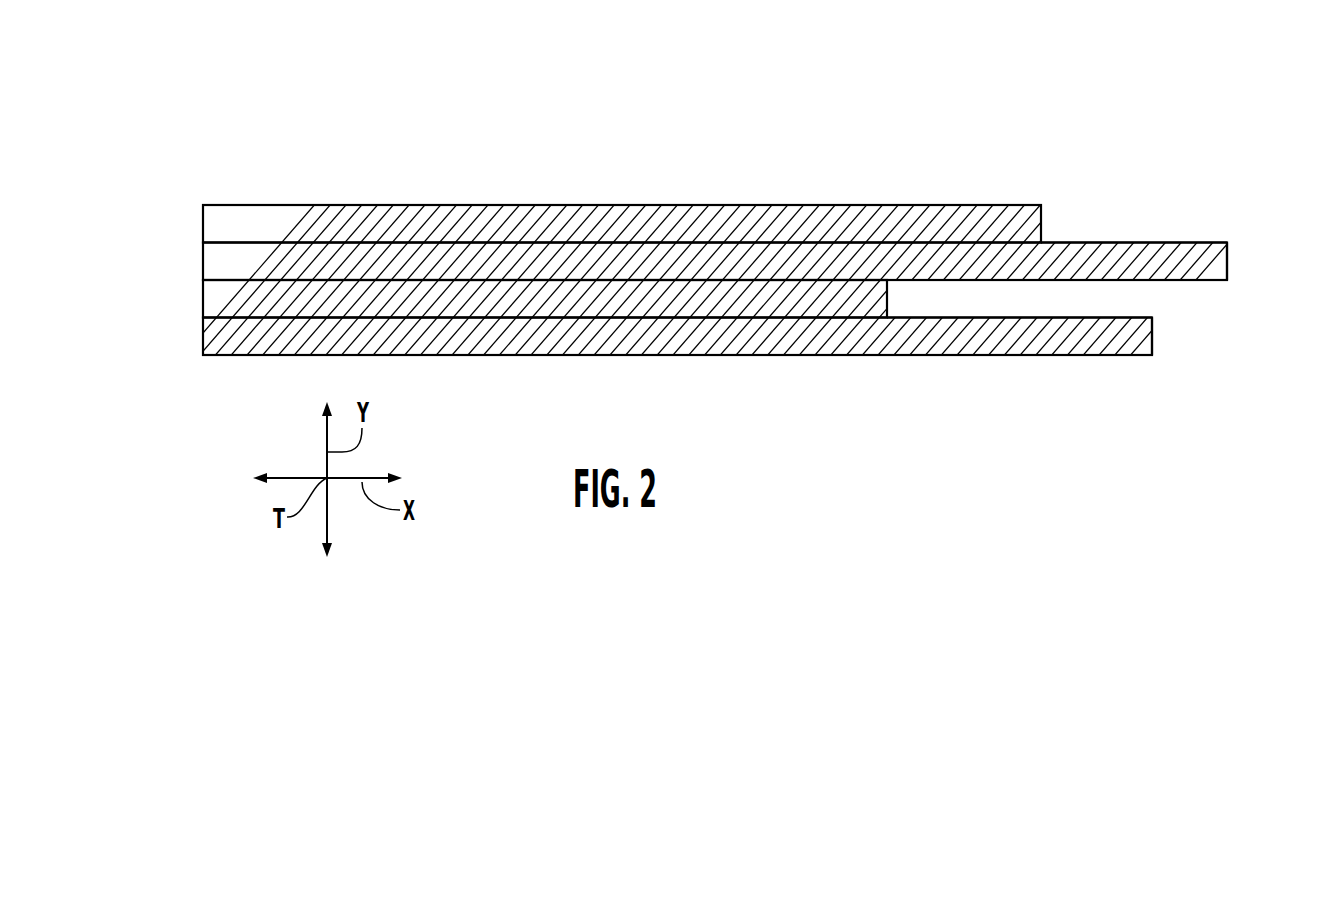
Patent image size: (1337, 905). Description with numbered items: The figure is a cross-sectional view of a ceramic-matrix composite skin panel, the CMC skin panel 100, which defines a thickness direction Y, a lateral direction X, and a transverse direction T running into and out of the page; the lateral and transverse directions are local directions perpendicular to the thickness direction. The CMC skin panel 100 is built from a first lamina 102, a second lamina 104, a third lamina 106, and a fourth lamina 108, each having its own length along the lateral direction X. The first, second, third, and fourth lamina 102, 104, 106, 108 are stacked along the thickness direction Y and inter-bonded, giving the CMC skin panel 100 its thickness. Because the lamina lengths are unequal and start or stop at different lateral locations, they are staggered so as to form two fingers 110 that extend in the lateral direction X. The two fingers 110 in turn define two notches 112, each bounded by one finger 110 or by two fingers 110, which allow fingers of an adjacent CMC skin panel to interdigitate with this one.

The CMC skin panel 100 is at (718, 231).
The first lamina 102 is at (203, 223).
The second lamina 104 is at (203, 258).
The third lamina 106 is at (203, 298).
The fourth lamina 108 is at (203, 335).
The fingers 110 is at (1227, 259).
The notches 112 is at (1178, 214).